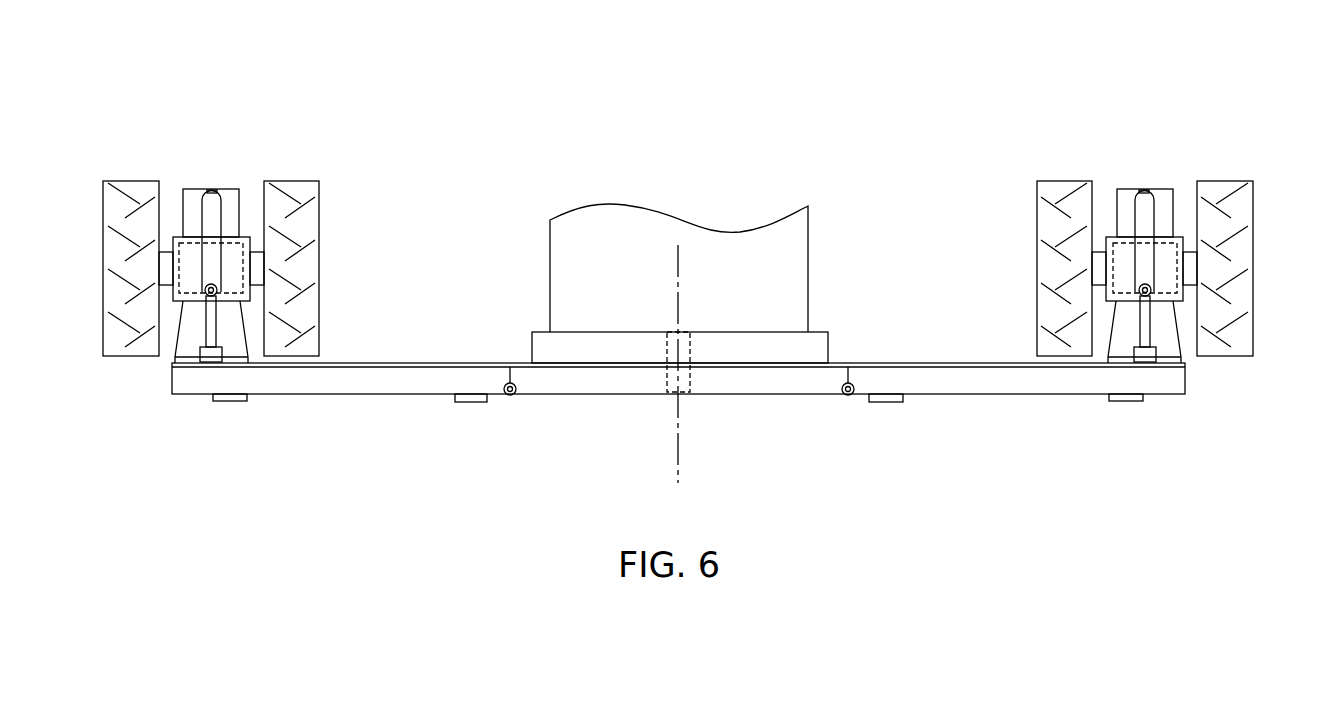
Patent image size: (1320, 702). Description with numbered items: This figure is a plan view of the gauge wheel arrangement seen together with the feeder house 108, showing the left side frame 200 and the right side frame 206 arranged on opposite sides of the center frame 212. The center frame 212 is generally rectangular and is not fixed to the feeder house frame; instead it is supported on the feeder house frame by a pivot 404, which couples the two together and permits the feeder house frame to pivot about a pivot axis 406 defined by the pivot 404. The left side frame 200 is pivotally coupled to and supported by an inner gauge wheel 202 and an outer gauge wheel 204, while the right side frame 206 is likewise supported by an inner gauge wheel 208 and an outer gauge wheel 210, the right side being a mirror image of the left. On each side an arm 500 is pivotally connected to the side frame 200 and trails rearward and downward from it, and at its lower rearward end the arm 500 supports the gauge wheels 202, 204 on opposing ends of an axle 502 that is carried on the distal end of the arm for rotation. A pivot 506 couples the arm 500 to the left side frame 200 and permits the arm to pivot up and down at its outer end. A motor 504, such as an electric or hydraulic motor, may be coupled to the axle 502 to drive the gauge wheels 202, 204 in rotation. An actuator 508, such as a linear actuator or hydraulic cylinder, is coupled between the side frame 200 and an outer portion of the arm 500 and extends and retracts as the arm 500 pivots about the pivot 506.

The feeder house 108 is at (549, 275).
The left side frame 200 is at (980, 395).
The inner gauge wheel 202 is at (1052, 187).
The outer gauge wheel 204 is at (1213, 185).
The right side frame 206 is at (340, 395).
The inner gauge wheel 208 is at (300, 185).
The outer gauge wheel 210 is at (110, 187).
The center frame 212 is at (728, 395).
The pivot 404 is at (692, 343).
The pivot axis 406 is at (812, 348).
The arm 500 is at (230, 203).
The axle 502 is at (173, 253).
The motor 504 is at (193, 245).
The pivot 506 is at (172, 358).
The actuator 508 is at (213, 265).